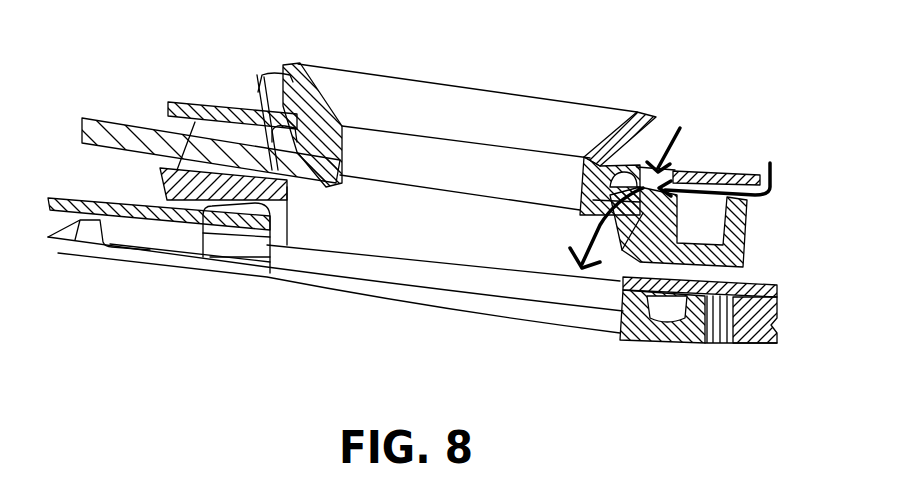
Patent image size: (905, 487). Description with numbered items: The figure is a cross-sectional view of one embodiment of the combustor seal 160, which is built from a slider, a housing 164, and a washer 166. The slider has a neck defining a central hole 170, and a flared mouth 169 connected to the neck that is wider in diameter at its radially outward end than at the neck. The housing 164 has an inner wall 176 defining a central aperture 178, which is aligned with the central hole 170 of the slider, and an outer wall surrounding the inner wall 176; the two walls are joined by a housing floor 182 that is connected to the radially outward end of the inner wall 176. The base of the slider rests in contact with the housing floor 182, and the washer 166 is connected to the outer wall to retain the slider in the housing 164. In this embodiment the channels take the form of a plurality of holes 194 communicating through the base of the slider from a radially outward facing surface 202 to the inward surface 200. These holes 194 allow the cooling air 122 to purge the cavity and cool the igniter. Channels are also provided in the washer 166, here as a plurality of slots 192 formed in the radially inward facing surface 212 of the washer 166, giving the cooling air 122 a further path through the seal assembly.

The cooling air 122 is at (678, 128).
The combustor seal 160 is at (375, 327).
The housing 164 is at (698, 333).
The washer 166 is at (170, 102).
The flared mouth 169 is at (545, 118).
The central hole 170 is at (462, 183).
The inner wall 176 is at (578, 198).
The central aperture 178 is at (462, 246).
The housing floor 182 is at (622, 250).
The slots 192 is at (700, 183).
The holes 194 is at (302, 165).
The inward surface 200 is at (225, 204).
The radially outward facing surface 202 is at (258, 90).
The radially inward facing surface 212 is at (187, 122).